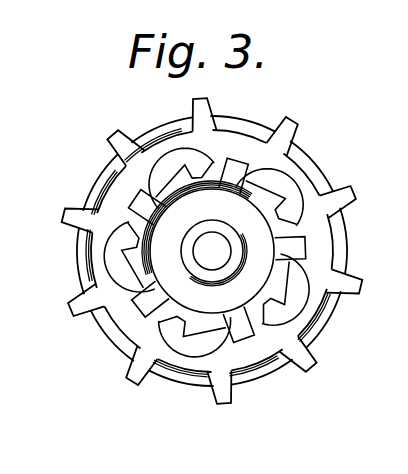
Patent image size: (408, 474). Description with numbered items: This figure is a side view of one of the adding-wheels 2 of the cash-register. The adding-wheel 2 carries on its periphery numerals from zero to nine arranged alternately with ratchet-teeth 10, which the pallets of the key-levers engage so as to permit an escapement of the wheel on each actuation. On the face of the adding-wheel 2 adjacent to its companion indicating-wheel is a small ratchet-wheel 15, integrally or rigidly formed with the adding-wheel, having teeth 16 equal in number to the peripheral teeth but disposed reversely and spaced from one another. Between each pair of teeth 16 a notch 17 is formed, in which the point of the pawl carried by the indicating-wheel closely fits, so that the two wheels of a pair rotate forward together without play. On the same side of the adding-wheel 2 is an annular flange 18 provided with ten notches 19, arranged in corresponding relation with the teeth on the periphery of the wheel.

The adding-wheel 2 is at (268, 155).
The ratchet-teeth 10 is at (132, 370).
The ratchet-wheel 15 is at (167, 262).
The teeth 16 is at (128, 252).
The notch 17 is at (147, 193).
The annular flange 18 is at (187, 384).
The notches 19 is at (230, 402).